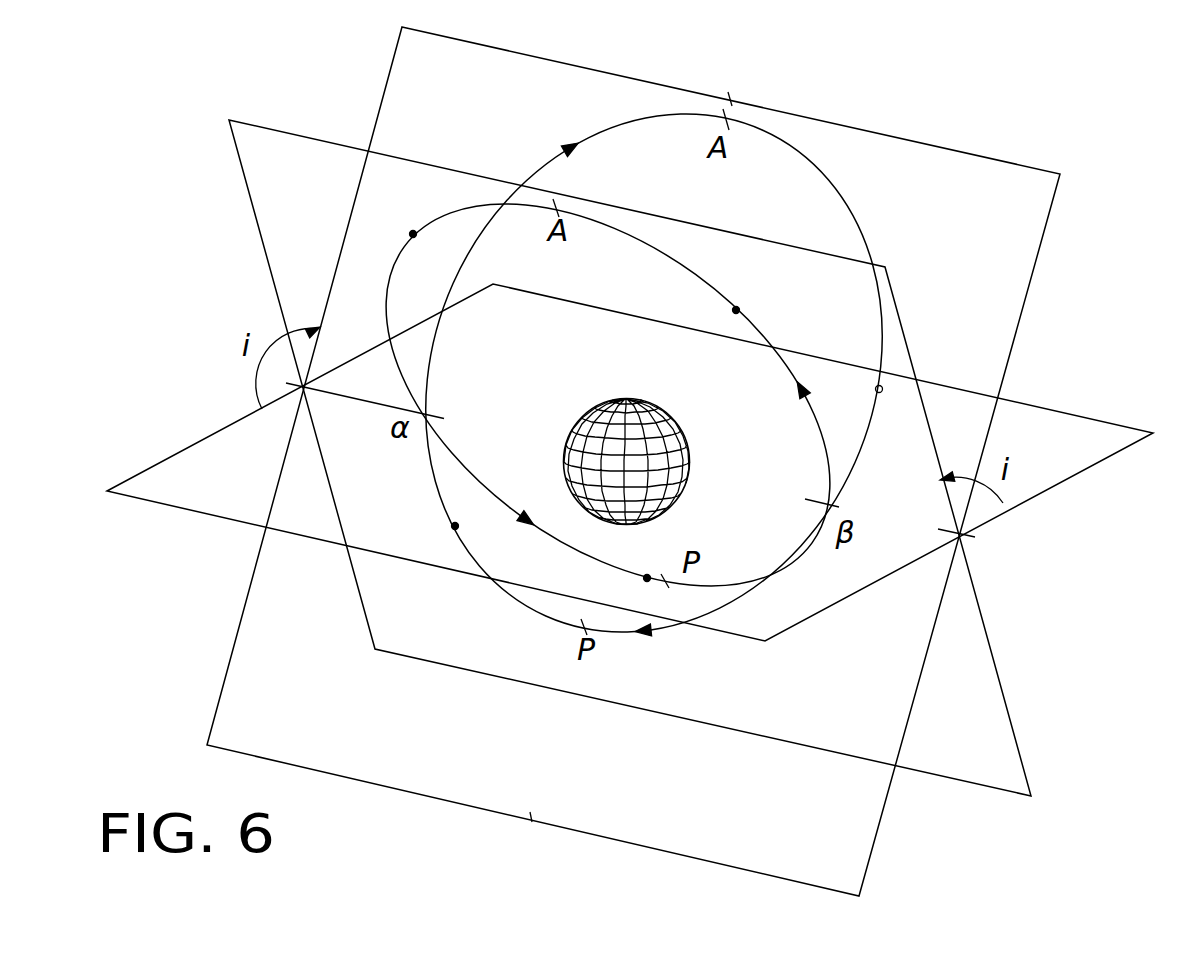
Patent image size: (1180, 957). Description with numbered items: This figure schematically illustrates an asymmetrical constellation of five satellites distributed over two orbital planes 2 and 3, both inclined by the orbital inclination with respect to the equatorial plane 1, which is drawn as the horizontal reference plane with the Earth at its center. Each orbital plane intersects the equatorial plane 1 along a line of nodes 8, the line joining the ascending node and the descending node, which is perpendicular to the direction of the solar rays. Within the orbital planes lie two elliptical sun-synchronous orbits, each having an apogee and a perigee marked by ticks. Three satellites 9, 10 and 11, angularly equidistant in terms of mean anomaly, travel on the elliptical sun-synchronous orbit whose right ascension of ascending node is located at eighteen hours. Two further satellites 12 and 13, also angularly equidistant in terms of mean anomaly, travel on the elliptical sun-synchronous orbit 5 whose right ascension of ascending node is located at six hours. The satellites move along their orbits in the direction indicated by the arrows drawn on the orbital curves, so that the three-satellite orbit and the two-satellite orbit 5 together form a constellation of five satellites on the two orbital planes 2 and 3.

The equatorial plane 1 is at (630, 462).
The orbital plane 2 is at (630, 458).
The orbital plane 3 is at (633, 461).
The elliptical sun-synchronous orbit 5 is at (654, 373).
The line of nodes 8 is at (378, 401).
The satellite 9 is at (752, 299).
The satellite 10 is at (398, 220).
The satellite 11 is at (625, 593).
The satellite 12 is at (897, 410).
The satellite 13 is at (432, 525).